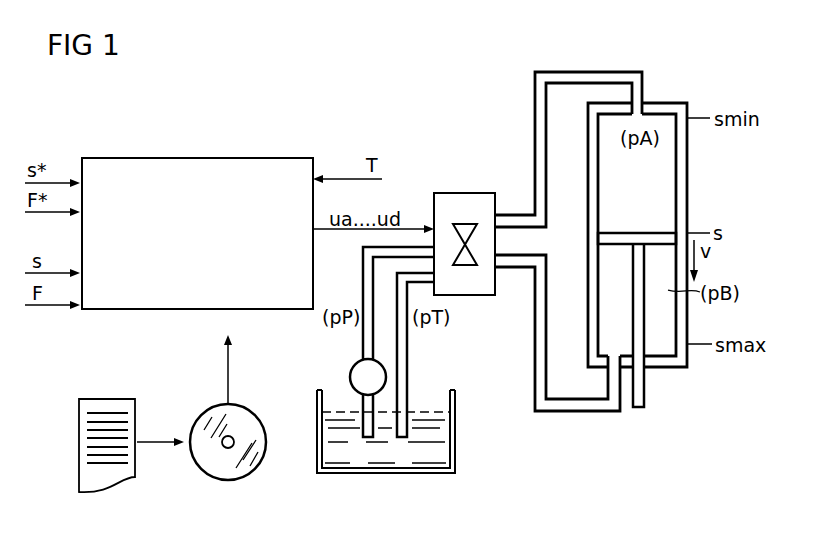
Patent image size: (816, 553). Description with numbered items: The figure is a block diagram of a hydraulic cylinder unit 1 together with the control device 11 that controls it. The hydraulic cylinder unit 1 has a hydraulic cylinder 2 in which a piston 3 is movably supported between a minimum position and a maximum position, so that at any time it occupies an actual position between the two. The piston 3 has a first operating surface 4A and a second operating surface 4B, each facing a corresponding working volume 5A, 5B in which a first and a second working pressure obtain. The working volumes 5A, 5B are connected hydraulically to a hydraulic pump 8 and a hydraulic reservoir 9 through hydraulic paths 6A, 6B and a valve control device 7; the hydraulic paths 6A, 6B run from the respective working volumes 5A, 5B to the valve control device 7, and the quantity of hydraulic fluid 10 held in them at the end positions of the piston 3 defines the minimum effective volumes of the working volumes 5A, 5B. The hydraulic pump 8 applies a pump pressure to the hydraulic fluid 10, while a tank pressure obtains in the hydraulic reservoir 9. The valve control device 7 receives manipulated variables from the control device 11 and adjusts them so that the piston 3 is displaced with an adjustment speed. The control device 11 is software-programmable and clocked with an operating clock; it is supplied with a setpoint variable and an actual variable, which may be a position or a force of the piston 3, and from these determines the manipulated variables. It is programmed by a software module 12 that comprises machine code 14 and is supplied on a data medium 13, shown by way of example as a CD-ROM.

The hydraulic cylinder unit 1 is at (515, 65).
The hydraulic cylinder 2 is at (682, 163).
The piston 3 is at (598, 233).
The first operating surface 4A is at (636, 232).
The second operating surface 4B is at (621, 246).
The first working volume 5A is at (606, 166).
The second working volume 5B is at (668, 318).
The first hydraulic path 6A is at (540, 122).
The second hydraulic path 6B is at (572, 406).
The valve control device 7 is at (462, 192).
The hydraulic pump 8 is at (350, 377).
The hydraulic reservoir 9 is at (455, 441).
The hydraulic fluid 10 is at (422, 422).
The control device 11 is at (197, 157).
The software module 12 is at (83, 422).
The data medium 13 is at (228, 481).
The machine code 14 is at (68, 408).